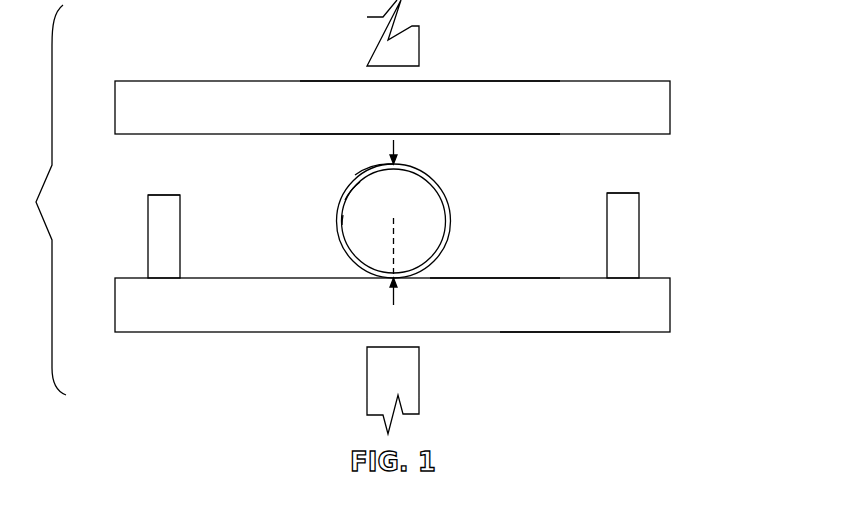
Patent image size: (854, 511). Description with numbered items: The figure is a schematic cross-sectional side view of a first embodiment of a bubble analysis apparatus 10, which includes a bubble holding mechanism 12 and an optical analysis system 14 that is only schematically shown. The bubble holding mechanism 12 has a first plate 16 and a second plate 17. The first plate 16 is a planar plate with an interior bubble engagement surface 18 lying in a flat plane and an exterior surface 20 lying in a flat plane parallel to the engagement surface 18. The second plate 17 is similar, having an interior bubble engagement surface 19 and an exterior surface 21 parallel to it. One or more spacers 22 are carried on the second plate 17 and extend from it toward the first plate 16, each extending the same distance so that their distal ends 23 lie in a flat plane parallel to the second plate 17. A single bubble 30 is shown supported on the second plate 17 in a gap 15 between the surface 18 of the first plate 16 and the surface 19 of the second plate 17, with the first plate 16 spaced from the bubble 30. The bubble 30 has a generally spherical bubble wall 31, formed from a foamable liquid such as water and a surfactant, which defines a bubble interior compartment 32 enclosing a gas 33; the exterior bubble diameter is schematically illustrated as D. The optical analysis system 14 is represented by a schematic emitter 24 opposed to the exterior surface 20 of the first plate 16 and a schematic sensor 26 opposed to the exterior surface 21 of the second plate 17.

The bubble analysis apparatus 10 is at (161, 28).
The bubble holding mechanism 12 is at (686, 184).
The optical analysis system 14 is at (440, 51).
The gap 15 is at (269, 211).
The first plate 16 is at (642, 97).
The second plate 17 is at (545, 290).
The interior bubble engagement surface 18 is at (517, 135).
The interior bubble engagement surface 19 is at (470, 278).
The exterior surface 20 is at (535, 80).
The exterior surface 21 is at (558, 332).
The spacers 22 is at (168, 254).
The distal ends 23 is at (163, 195).
The emitter 24 is at (420, 27).
The sensor 26 is at (415, 403).
The bubble 30 is at (452, 197).
The bubble wall 31 is at (362, 173).
The bubble interior compartment 32 is at (363, 210).
The gas 33 is at (362, 232).
The exterior bubble diameter D is at (396, 225).